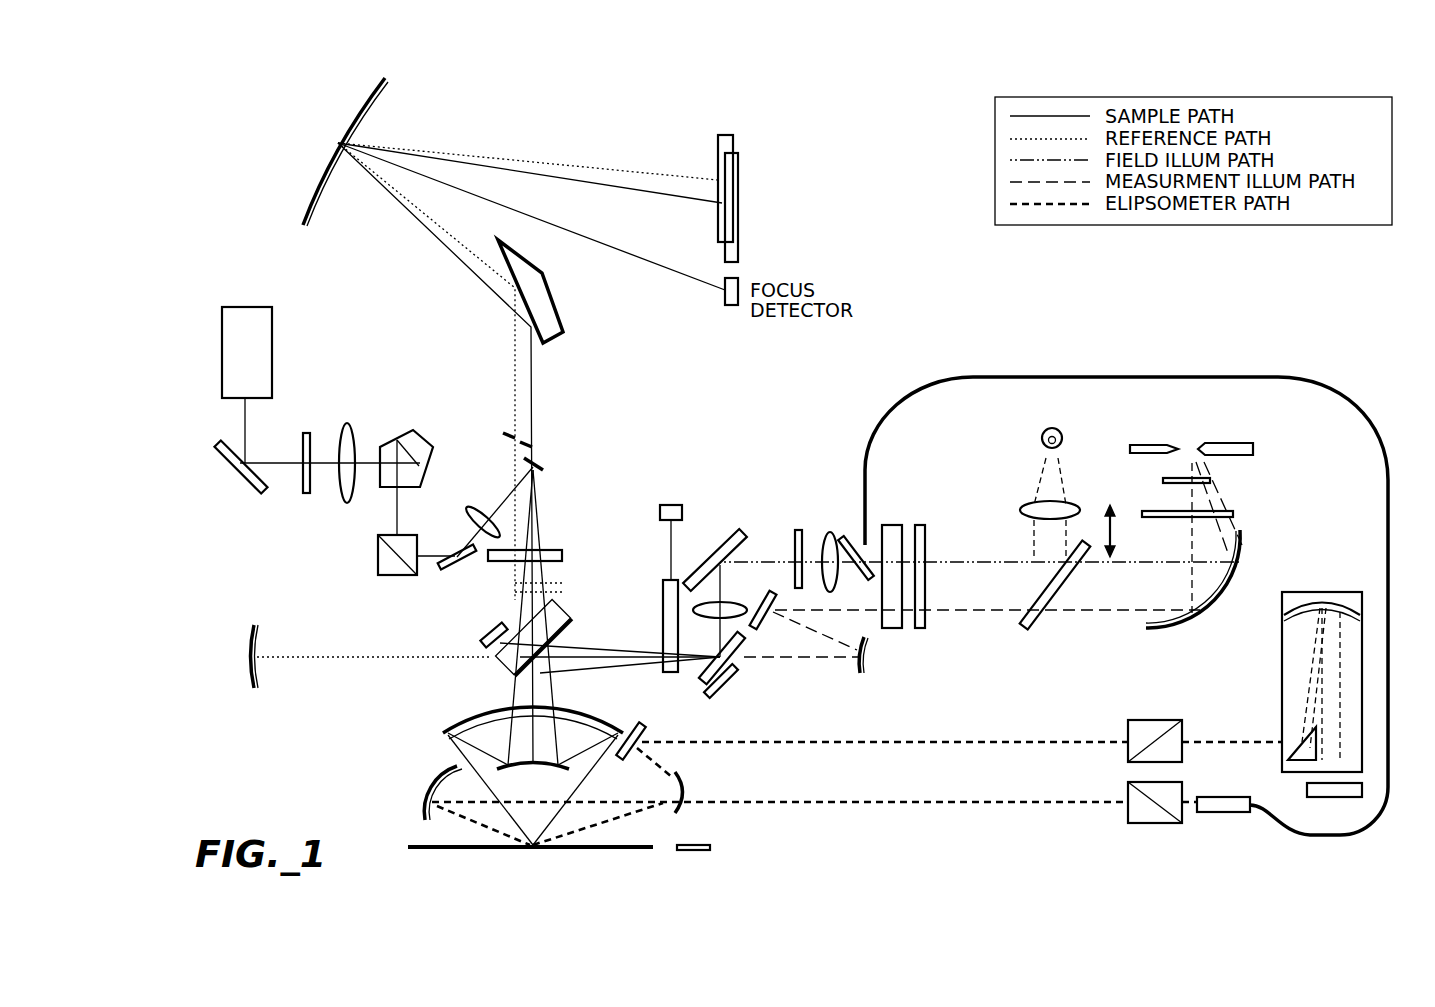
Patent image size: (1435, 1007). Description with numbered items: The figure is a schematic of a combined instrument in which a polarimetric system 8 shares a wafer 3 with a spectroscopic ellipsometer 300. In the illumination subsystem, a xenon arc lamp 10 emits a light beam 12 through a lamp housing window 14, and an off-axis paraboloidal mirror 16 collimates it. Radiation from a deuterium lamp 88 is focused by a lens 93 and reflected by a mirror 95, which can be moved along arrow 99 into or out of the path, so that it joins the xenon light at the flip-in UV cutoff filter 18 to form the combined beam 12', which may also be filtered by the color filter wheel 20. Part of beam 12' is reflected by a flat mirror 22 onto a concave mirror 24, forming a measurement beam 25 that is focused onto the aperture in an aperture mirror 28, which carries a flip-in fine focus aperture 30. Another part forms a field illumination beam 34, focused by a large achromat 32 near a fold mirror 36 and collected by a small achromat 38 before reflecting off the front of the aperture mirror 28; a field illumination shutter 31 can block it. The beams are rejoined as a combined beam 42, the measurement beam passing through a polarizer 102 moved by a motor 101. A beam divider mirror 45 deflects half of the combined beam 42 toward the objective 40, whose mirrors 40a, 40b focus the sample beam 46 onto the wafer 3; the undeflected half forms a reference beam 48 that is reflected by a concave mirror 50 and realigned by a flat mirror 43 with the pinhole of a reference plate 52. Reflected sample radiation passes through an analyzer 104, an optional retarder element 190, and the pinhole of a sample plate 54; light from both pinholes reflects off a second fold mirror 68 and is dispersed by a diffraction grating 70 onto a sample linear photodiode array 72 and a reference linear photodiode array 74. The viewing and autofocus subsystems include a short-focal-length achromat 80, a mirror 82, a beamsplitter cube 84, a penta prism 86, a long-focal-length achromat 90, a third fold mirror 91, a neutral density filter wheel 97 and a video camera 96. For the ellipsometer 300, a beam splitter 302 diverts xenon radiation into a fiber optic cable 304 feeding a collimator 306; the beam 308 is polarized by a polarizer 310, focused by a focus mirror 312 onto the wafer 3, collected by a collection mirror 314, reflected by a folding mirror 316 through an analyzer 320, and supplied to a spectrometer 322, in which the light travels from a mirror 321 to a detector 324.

The polarimetric system 8 is at (258, 155).
The diffraction grating 70 is at (343, 112).
The second fold mirror 68 is at (565, 325).
The reference linear photodiode array 74 is at (727, 135).
The sample linear photodiode array 72 is at (740, 237).
The video camera 96 is at (260, 361).
The third fold mirror 91 is at (222, 470).
The neutral density filter wheel 97 is at (305, 495).
The achromat 90 is at (340, 440).
The penta prism 86 is at (426, 430).
The beamsplitter cube 84 is at (378, 575).
The mirror 82 is at (455, 548).
The achromat 80 is at (490, 505).
The reference plate 52 is at (509, 430).
The sample plate 54 is at (540, 455).
The analyzer 104 is at (550, 550).
The retarder element 190 is at (515, 583).
The beam divider mirror 45 is at (568, 610).
The flat mirror 43 is at (485, 636).
The concave mirror 50 is at (250, 640).
The reference beam 48 is at (287, 660).
The combined beam 42 is at (580, 660).
The sample beam 46 is at (553, 686).
The motor 101 is at (673, 505).
The polarizer 102 is at (678, 580).
The fold mirror 36 is at (713, 543).
The field illumination beam 34 is at (736, 562).
The small achromat 38 is at (730, 603).
The flat mirror 22 is at (775, 605).
The combined light beam 12' is at (987, 597).
The measurement beam 25 is at (812, 656).
The field illumination shutter 31 is at (799, 530).
The large achromat 32 is at (828, 533).
The beam splitter 302 is at (862, 560).
The aperture mirror 28 is at (743, 648).
The fine focus aperture 30 is at (737, 684).
The concave mirror 24 is at (870, 660).
The fiber optic cable 304 is at (1140, 377).
The deuterium lamp 88 is at (1062, 437).
The lens 93 is at (1055, 468).
The arrow 99 is at (1082, 510).
The color filter wheel 20 is at (892, 525).
The flip-in UV cutoff filter 18 is at (928, 600).
The mirror 95 is at (1070, 580).
The lamp 10 is at (1192, 453).
The light beam 12 is at (1249, 482).
The lamp housing window 14 is at (1182, 520).
The off-axis paraboloidal mirror 16 is at (1242, 668).
The spectroscopic ellipsometer 300 is at (1033, 853).
The spectrometer 322 is at (1282, 688).
The mirror 321 is at (1287, 752).
The detector 324 is at (1350, 797).
The analyzer 320 is at (1128, 745).
The polarizer 310 is at (1128, 800).
The collimator 306 is at (1210, 812).
The beam 308 is at (472, 820).
The focus mirror 312 is at (423, 790).
The folding mirror 316 is at (645, 748).
The collection mirror 314 is at (712, 848).
The wafer 3 is at (493, 850).
The objective 40 is at (445, 721).
The mirror 40b is at (485, 712).
The mirror 40a is at (508, 775).